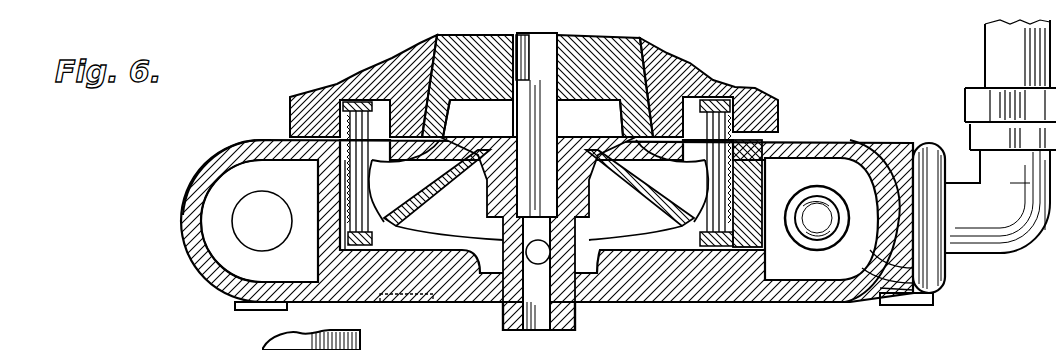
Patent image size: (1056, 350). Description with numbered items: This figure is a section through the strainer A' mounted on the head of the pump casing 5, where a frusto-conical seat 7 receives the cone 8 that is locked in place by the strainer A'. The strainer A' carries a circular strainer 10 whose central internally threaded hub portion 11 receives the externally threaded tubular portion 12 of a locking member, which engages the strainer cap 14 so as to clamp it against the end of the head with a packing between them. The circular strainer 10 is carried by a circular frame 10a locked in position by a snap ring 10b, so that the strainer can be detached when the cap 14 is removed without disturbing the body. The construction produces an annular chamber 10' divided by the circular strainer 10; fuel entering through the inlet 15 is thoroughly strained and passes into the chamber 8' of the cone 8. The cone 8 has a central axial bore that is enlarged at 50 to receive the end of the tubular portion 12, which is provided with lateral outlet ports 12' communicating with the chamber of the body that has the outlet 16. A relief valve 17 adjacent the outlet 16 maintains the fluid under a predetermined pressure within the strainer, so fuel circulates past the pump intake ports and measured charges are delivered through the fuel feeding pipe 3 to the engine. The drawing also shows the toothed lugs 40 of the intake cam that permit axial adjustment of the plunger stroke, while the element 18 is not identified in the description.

The fuel feeding pipe 3 is at (1000, 63).
The casing 5 is at (400, 86).
The frusto-conical seat 7 is at (648, 88).
The cone 8 is at (563, 86).
The chamber of the cone 8' is at (478, 118).
The circular strainer 10 is at (557, 235).
The circular frame 10a is at (343, 243).
The snap ring 10b is at (357, 253).
The annular chamber 10' is at (744, 189).
The internally threaded hub portion 11 is at (628, 178).
The tubular portion 12 is at (580, 118).
The lateral outlet ports 12' is at (436, 193).
The strainer cap 14 is at (233, 152).
The inlet 15 is at (247, 236).
The outlet 16 is at (930, 270).
The relief valve 17 is at (812, 205).
The lower boss 18 is at (513, 319).
The toothed lugs 40 is at (530, 283).
The enlarged portion of the axial bore 50 is at (517, 36).
The strainer A' is at (221, 221).